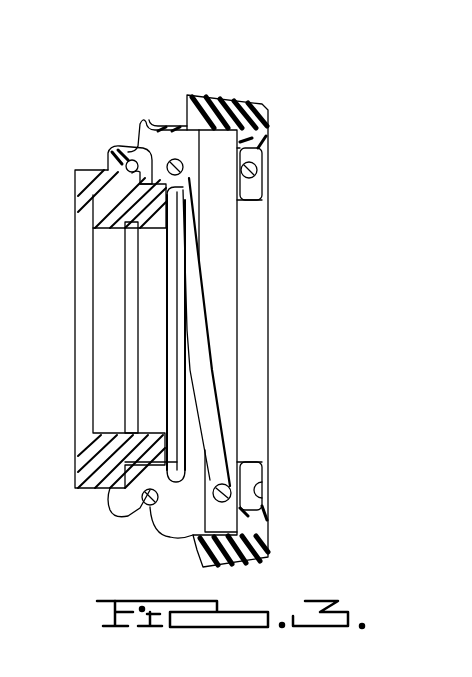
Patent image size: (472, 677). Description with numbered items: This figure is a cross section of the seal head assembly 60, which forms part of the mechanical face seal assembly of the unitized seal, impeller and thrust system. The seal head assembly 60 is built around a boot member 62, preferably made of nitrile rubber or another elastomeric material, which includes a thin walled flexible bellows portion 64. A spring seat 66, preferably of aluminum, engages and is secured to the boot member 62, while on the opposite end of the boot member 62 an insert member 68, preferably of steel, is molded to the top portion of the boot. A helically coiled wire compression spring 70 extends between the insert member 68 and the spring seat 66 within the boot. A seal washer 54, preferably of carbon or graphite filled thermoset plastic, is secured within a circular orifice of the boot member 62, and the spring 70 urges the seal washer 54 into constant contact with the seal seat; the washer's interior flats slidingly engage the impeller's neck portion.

The seal washer 54 is at (107, 212).
The seal head assembly 60 is at (104, 120).
The boot member 62 is at (231, 100).
The bellows portion 64 is at (148, 127).
The spring seat 66 is at (268, 162).
The insert member 68 is at (107, 167).
The compression spring 70 is at (217, 445).